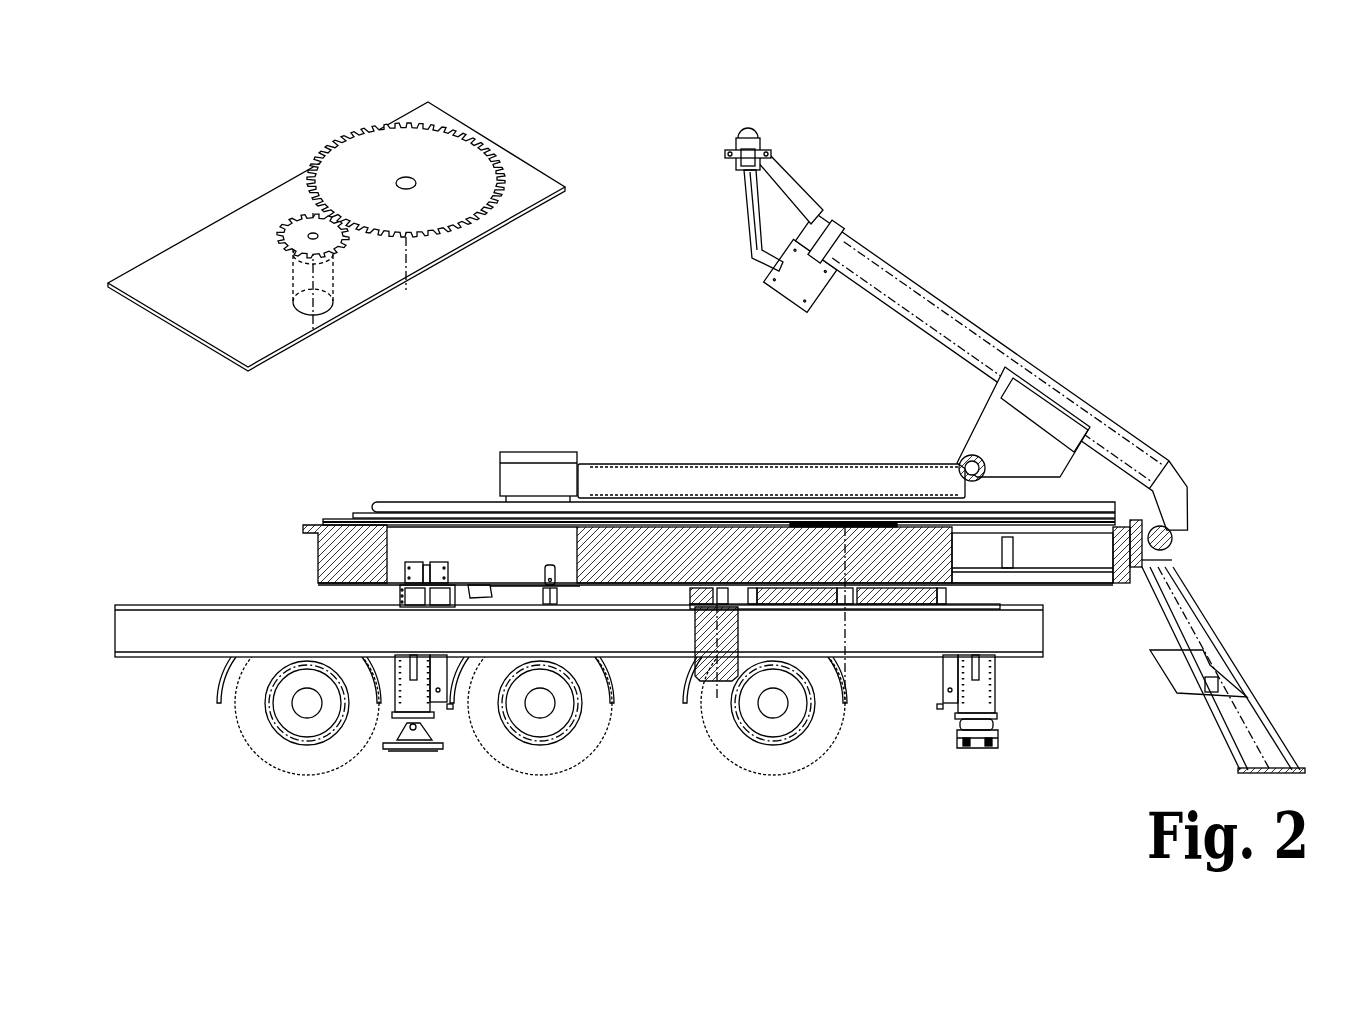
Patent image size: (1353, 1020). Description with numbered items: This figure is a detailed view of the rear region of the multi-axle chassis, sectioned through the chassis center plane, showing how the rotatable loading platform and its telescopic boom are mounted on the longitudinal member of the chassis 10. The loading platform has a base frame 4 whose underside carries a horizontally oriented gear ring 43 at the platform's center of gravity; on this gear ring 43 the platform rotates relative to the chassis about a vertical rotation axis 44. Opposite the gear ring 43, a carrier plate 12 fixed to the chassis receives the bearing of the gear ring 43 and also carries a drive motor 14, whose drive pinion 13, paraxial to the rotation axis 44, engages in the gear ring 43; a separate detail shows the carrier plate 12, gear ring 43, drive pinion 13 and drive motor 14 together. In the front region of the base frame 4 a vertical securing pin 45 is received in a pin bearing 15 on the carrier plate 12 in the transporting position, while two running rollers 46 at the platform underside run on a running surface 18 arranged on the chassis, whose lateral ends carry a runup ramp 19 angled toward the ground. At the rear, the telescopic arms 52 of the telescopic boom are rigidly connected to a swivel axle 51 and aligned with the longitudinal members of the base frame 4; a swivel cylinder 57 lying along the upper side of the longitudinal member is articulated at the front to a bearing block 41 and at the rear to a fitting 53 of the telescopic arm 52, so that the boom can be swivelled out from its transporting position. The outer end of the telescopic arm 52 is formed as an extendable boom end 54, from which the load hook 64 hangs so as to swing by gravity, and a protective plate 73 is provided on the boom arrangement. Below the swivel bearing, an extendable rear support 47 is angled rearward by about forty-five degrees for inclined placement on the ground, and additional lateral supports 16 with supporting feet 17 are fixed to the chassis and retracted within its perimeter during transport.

The base frame 4 is at (278, 550).
The longitudinal member of the chassis 10 is at (186, 658).
The carrier plate 12 is at (160, 320).
The drive pinion 13 is at (283, 226).
The drive motor 14 is at (298, 306).
The pin bearing 15 is at (553, 606).
The lateral support 16 is at (432, 710).
The supporting feet 17 is at (412, 750).
The running surface 18 is at (398, 578).
The runup ramp 19 is at (475, 580).
The bearing block 41 is at (562, 500).
The gear ring 43 is at (345, 135).
The rotation axis 44 is at (404, 288).
The securing pin 45 is at (546, 566).
The running roller 46 is at (420, 560).
The rear support 47 is at (1249, 698).
The swivel axle 51 is at (1172, 527).
The telescopic arm 52 is at (1016, 298).
The fitting 53 is at (982, 452).
The boom end 54 is at (786, 171).
The swivel cylinder 57 is at (742, 458).
The load hook 64 is at (746, 207).
The protective plate 73 is at (512, 452).